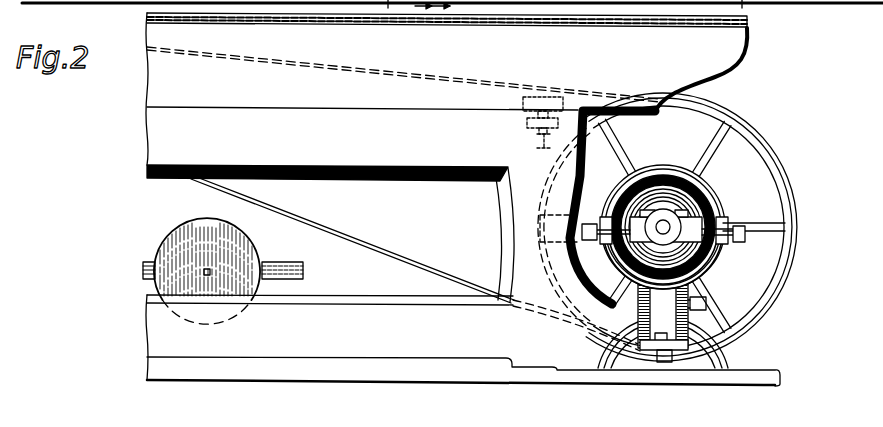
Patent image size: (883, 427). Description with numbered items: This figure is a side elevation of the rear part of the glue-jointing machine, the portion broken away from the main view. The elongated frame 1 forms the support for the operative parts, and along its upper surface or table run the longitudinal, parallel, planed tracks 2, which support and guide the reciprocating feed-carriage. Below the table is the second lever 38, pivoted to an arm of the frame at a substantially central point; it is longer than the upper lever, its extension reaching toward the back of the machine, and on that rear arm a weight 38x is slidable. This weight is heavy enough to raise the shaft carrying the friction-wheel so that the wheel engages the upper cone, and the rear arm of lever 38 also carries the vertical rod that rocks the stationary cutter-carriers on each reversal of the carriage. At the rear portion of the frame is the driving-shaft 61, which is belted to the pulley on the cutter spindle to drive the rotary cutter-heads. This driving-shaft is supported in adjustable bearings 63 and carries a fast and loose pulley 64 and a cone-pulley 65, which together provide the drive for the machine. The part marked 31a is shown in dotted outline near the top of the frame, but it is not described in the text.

The frame 1 is at (463, 199).
The tracks 2 is at (341, 15).
The stop member 31a is at (538, 143).
The second lever 38 is at (272, 265).
The weight 38x is at (202, 221).
The driving-shaft 61 is at (668, 225).
The adjustable bearings 63 is at (735, 211).
The fast and loose pulley 64 is at (653, 168).
The cone-pulley 65 is at (701, 180).